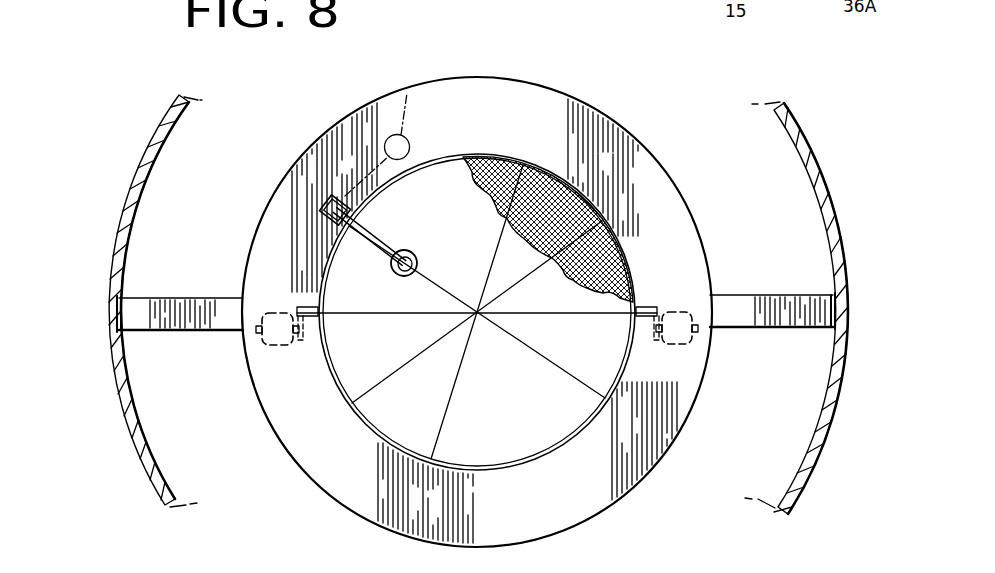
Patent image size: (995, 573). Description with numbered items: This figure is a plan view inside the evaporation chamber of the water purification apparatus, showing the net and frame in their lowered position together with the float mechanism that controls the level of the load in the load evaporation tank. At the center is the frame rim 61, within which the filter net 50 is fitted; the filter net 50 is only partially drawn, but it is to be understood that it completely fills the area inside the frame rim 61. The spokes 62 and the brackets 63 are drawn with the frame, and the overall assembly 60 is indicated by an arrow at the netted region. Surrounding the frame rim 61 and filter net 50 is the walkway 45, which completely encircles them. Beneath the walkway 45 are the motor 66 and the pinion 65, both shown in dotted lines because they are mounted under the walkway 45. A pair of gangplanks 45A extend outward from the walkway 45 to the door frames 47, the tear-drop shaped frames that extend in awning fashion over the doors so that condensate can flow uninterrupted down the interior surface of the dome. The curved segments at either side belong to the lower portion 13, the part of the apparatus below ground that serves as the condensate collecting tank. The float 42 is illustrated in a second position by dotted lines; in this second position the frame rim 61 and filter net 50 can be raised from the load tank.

The lower portion 13 is at (150, 480).
The float 42 is at (409, 91).
The walkway 45 is at (665, 425).
The gangplanks 45A is at (212, 298).
The door frame 47 is at (118, 333).
The filter net 50 is at (491, 210).
The disc assembly 60 is at (495, 274).
The frame rim 61 is at (628, 249).
The spoke 62 is at (483, 289).
The bracket 63 is at (302, 306).
The pinion 65 is at (300, 342).
The motor 66 is at (284, 346).